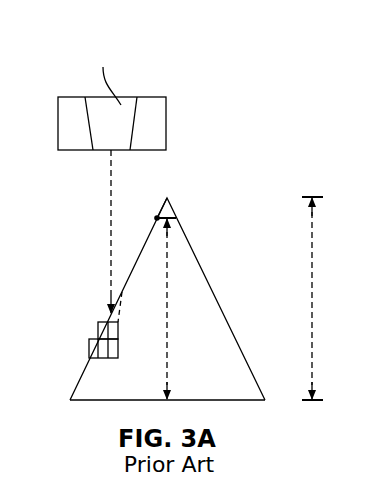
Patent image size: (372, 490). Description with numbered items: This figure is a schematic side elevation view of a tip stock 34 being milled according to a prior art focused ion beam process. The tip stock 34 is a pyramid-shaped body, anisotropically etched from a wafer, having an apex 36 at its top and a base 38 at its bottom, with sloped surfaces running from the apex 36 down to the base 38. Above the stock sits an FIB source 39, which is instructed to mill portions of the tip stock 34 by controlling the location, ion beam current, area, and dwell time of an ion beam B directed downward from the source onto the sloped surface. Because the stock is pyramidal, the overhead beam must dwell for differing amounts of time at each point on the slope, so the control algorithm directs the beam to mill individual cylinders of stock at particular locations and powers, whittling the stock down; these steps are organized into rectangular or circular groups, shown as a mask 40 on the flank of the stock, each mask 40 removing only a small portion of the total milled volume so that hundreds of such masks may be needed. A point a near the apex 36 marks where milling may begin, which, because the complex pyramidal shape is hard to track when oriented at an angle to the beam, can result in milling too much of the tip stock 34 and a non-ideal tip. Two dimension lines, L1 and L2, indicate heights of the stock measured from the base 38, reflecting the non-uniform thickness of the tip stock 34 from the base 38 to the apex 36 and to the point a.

The FIB source 39 is at (148, 97).
The apex 36 is at (168, 197).
The tip stock 34 is at (240, 343).
The base 38 is at (232, 413).
The mask 40 is at (89, 350).
The point a is at (155, 214).
The ion beam B is at (110, 245).
The length L1 is at (315, 268).
The length L2 is at (168, 343).